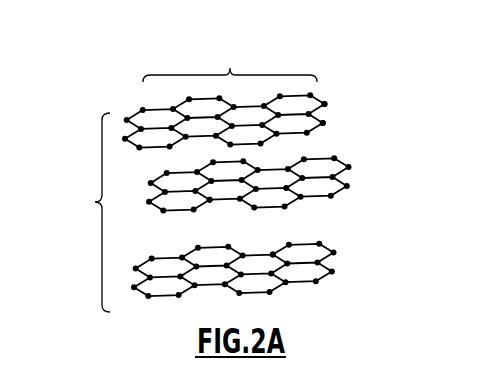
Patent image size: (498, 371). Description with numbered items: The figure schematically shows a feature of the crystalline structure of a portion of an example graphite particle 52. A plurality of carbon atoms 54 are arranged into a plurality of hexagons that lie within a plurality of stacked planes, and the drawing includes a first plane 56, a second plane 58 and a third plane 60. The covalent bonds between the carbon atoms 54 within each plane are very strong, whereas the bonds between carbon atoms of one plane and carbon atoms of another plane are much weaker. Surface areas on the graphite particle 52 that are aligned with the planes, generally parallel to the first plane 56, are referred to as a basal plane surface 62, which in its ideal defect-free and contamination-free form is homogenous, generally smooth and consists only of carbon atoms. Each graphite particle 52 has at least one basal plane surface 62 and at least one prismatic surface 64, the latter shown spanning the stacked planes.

The graphite particle 52 is at (108, 87).
The carbon atoms 54 is at (328, 121).
The first plane 56 is at (371, 124).
The second plane 58 is at (380, 182).
The third plane 60 is at (364, 266).
The basal plane surface 62 is at (230, 63).
The prismatic surface 64 is at (89, 212).